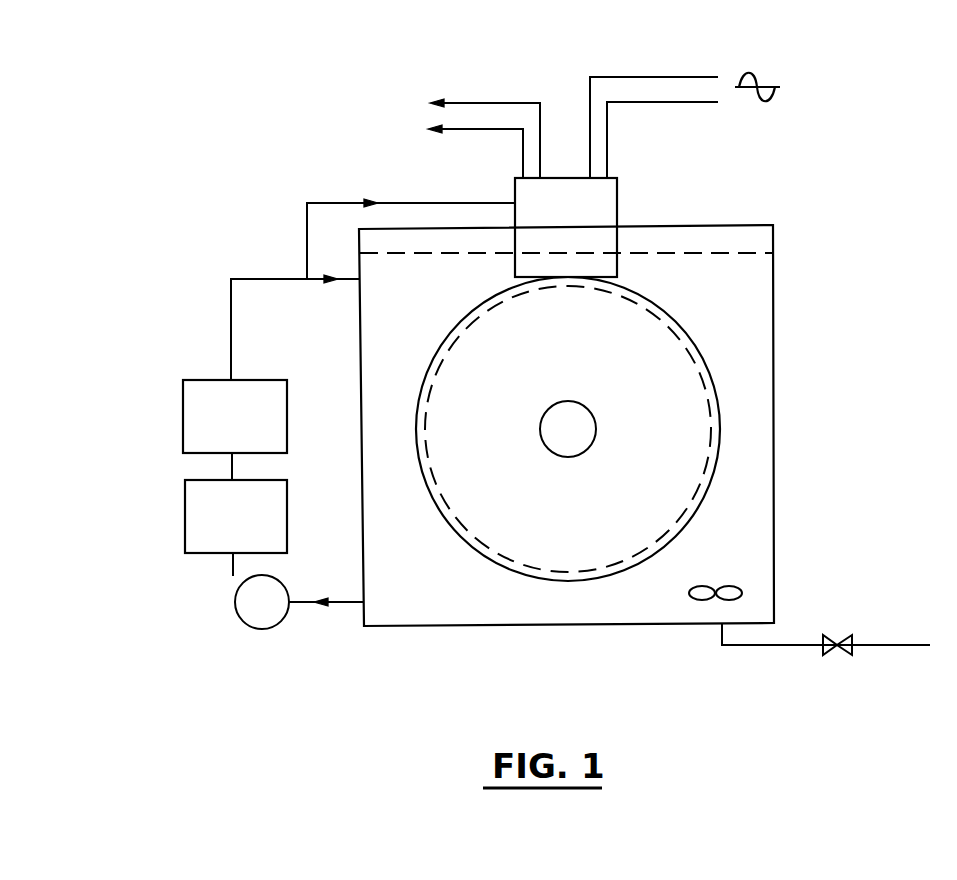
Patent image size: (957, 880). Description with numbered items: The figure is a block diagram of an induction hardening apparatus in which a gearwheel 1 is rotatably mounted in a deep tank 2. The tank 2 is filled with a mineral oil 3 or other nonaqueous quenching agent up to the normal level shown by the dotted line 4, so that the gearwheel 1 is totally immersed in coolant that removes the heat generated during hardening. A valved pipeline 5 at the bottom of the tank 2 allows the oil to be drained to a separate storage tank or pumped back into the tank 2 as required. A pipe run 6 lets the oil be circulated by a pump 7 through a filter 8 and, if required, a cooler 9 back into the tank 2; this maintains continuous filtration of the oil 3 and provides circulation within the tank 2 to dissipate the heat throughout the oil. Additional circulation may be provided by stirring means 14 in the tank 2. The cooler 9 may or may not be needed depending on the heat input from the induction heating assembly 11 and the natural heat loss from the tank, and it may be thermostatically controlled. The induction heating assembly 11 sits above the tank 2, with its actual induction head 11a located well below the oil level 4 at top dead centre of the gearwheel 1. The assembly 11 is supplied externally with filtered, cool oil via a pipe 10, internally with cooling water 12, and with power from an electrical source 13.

The gearwheel 1 is at (675, 423).
The deep tank 2 is at (773, 310).
The mineral oil 3 is at (740, 515).
The normal level 4 is at (643, 217).
The valved pipeline 5 is at (878, 645).
The pipe run 6 is at (231, 323).
The pump 7 is at (247, 602).
The filter 8 is at (212, 510).
The cooler 9 is at (208, 420).
The pipe 10 is at (307, 240).
The induction heating assembly 11 is at (596, 194).
The induction head 11a is at (595, 260).
The cooling water 12 is at (430, 129).
The electrical source 13 is at (785, 85).
The stirring means 14 is at (743, 588).